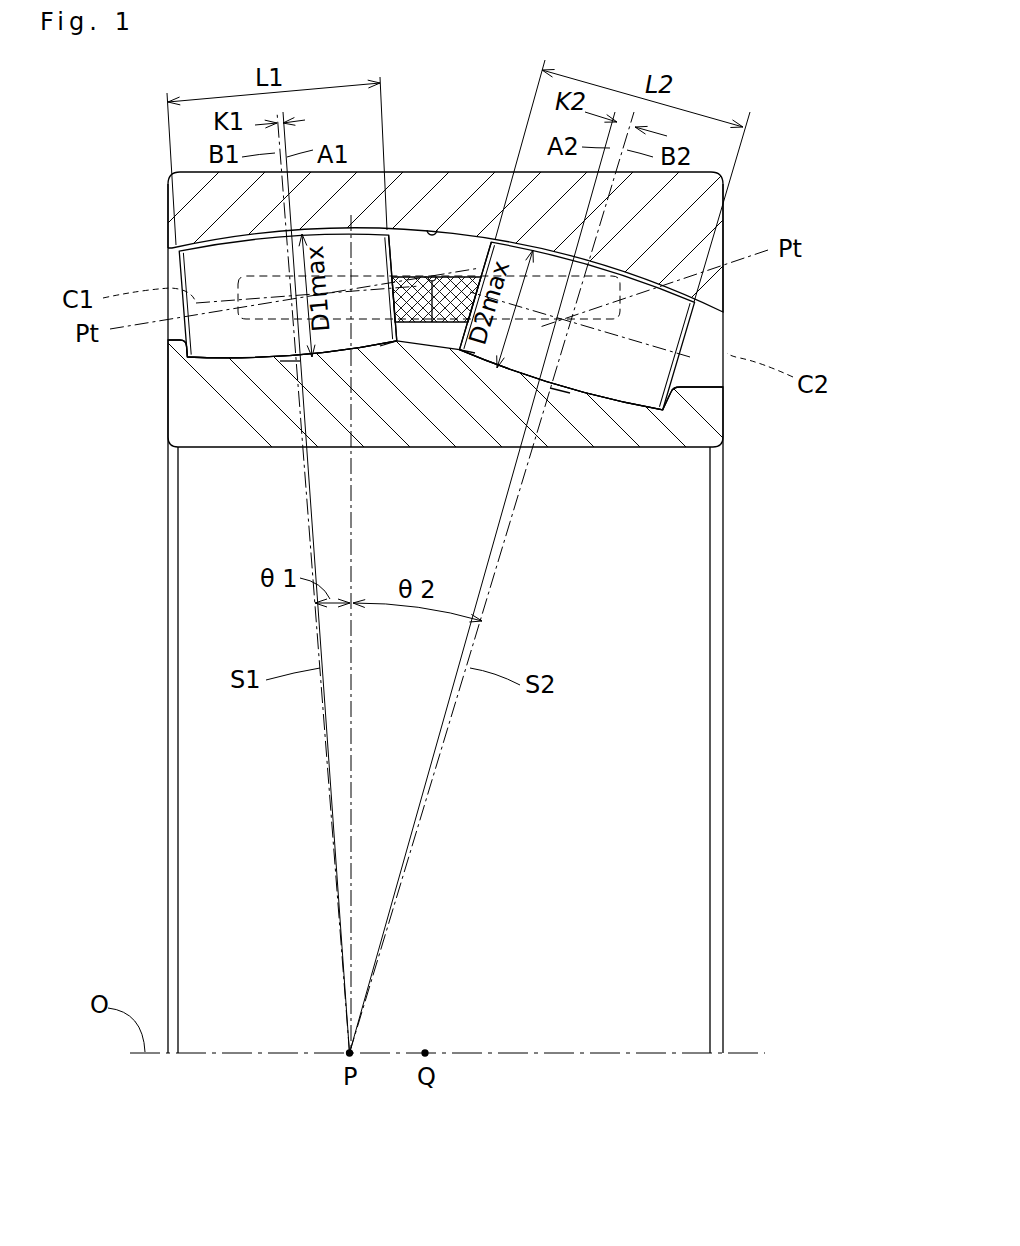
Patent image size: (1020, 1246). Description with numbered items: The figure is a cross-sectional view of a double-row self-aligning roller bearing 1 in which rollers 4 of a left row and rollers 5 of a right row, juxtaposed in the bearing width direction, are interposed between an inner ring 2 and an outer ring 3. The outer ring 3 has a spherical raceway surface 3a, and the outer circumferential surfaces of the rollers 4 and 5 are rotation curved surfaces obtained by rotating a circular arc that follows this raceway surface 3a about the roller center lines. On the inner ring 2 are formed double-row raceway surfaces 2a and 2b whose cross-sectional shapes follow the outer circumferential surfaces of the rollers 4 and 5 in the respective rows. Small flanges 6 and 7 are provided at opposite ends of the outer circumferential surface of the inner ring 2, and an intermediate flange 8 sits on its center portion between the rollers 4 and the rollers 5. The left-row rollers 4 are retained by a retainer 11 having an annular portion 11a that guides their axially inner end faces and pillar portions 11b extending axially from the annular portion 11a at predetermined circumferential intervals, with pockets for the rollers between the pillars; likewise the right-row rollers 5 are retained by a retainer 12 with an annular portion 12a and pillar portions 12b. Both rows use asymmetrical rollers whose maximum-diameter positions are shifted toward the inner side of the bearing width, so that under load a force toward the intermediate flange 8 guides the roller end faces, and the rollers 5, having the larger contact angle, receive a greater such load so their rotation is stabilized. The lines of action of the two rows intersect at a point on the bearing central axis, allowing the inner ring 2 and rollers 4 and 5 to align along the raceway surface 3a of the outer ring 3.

The double-row self-aligning roller bearing 1 is at (140, 139).
The inner ring 2 is at (192, 423).
The raceway surface 2a is at (207, 372).
The raceway surface 2b is at (662, 438).
The outer ring 3 is at (172, 220).
The spherical raceway surface 3a is at (433, 228).
The roller 4 is at (197, 278).
The roller 5 is at (667, 323).
The small flange 6 is at (175, 344).
The small flange 7 is at (690, 400).
The intermediate flange 8 is at (433, 323).
The retainer 11 is at (404, 272).
The annular portion 11a is at (393, 348).
The pillar portion 11b is at (290, 360).
The retainer 12 is at (458, 275).
The annular portion 12a is at (462, 354).
The pillar portion 12b is at (560, 375).